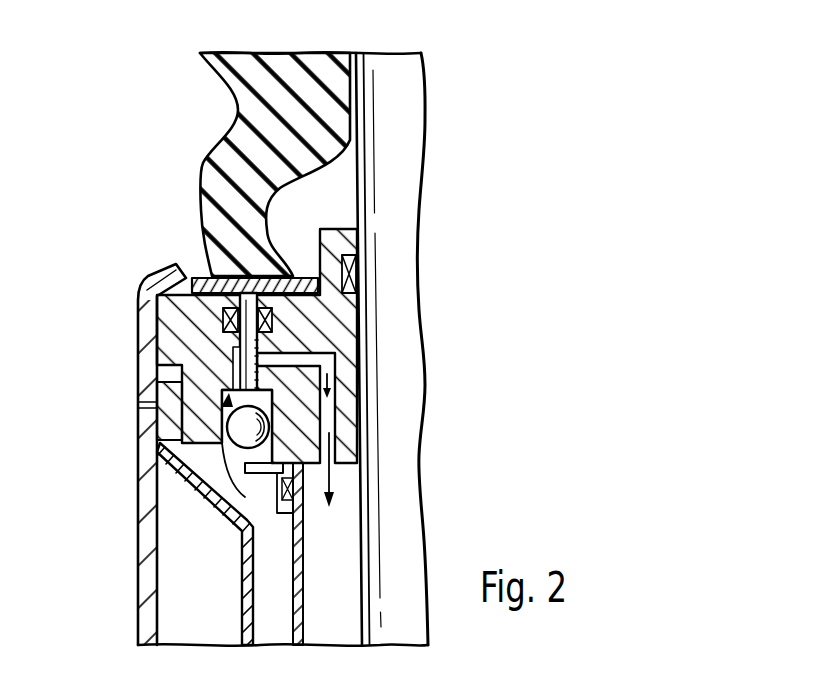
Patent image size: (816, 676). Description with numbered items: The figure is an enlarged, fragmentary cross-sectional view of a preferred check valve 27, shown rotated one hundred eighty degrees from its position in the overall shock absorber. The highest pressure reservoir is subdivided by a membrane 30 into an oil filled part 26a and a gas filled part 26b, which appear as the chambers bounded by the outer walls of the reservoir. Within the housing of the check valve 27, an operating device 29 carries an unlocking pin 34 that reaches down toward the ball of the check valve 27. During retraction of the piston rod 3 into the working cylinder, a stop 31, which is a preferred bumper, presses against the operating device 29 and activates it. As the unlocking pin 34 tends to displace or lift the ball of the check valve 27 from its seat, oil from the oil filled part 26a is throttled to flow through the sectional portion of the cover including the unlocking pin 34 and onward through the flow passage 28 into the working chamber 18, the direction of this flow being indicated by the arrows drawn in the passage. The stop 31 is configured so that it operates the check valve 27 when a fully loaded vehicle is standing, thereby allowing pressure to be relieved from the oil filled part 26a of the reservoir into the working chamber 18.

The piston rod 3 is at (393, 160).
The stop 31 is at (307, 93).
The operating device 29 is at (222, 277).
The check valve 27 is at (194, 378).
The unlocking pin 34 is at (240, 340).
The flow passage 28 is at (330, 410).
The membrane 30 is at (243, 538).
The working chamber 18 is at (347, 512).
The oil filled part 26a is at (247, 500).
The gas filled part 26b is at (178, 601).